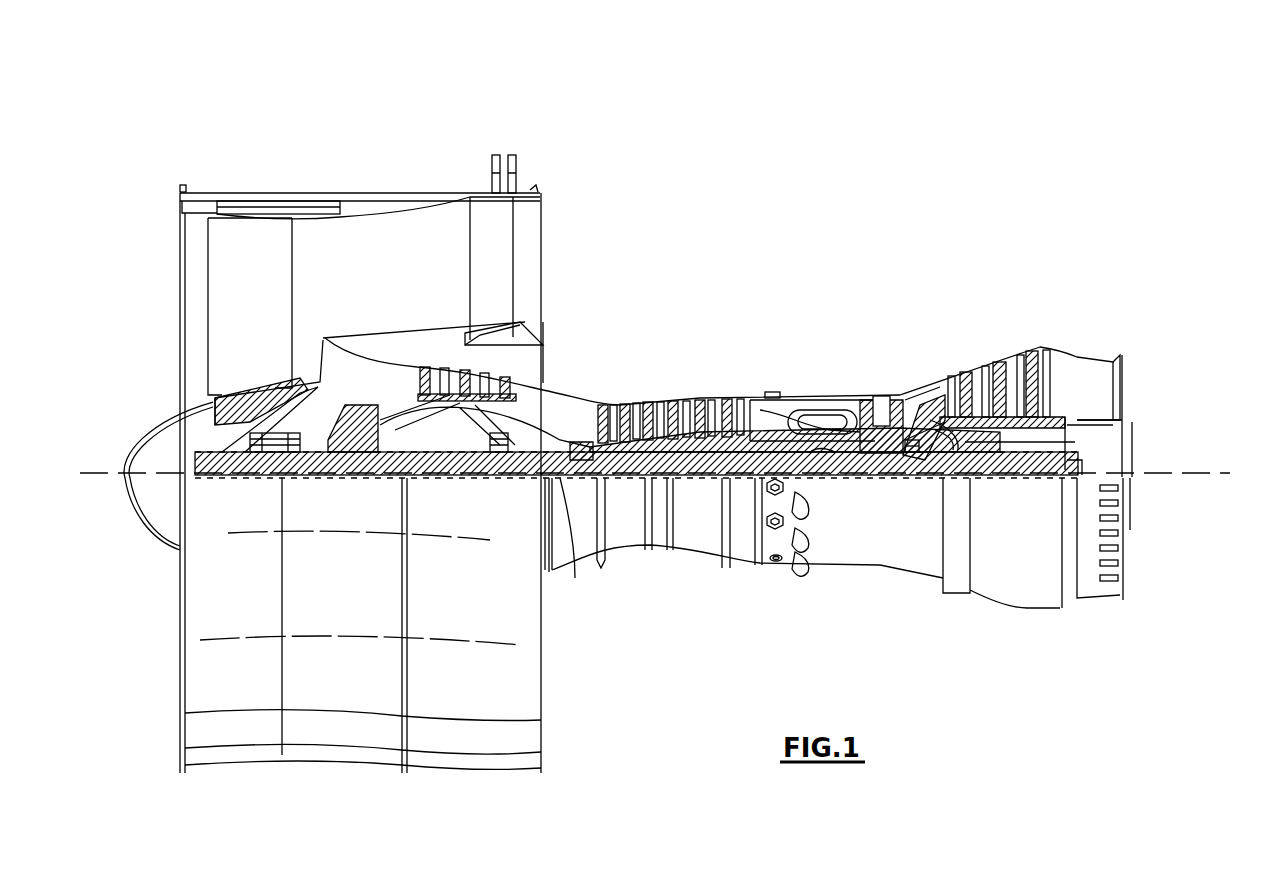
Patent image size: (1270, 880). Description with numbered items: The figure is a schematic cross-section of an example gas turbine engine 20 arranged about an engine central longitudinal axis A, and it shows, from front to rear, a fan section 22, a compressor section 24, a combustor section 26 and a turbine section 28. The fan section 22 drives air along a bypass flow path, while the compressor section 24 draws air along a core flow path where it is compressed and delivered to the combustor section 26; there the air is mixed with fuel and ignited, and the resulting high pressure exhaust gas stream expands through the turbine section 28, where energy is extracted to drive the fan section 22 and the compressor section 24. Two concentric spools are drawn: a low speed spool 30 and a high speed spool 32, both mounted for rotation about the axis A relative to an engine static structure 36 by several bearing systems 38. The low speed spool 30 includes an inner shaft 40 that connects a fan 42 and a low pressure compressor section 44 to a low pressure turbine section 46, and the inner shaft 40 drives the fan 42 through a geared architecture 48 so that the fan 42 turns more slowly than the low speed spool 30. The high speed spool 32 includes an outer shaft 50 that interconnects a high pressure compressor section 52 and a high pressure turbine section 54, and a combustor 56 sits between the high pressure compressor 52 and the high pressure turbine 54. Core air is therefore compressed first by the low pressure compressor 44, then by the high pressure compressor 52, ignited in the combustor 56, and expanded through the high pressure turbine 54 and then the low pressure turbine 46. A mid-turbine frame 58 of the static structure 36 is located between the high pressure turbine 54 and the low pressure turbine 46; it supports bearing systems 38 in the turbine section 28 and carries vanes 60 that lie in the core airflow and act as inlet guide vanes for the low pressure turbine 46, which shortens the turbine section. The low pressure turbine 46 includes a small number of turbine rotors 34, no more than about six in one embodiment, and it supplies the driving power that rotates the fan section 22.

The gas turbine engine 20 is at (828, 238).
The fan section 22 is at (390, 171).
The compressor section 24 is at (800, 311).
The combustor section 26 is at (903, 311).
The turbine section 28 is at (1078, 311).
The low speed spool 30 is at (700, 490).
The high speed spool 32 is at (740, 443).
The turbine rotors 34 is at (1017, 477).
The engine static structure 36 is at (740, 575).
The bearing systems 38 is at (253, 452).
The inner shaft 40 is at (570, 575).
The fan 42 is at (265, 319).
The low pressure compressor section 44 is at (480, 373).
The low pressure turbine section 46 is at (1007, 370).
The geared architecture 48 is at (368, 455).
The outer shaft 50 is at (823, 463).
The high pressure compressor section 52 is at (680, 447).
The high pressure turbine section 54 is at (880, 400).
The combustor 56 is at (820, 410).
The mid-turbine frame 58 is at (919, 385).
The vanes 60 is at (958, 470).
The engine central longitudinal axis A is at (1215, 472).